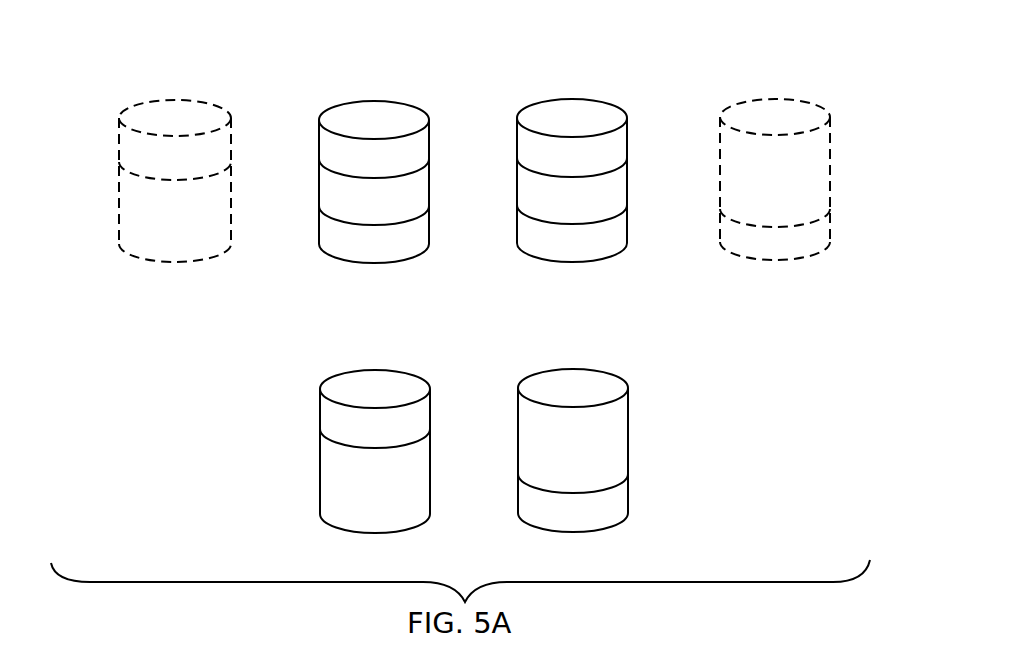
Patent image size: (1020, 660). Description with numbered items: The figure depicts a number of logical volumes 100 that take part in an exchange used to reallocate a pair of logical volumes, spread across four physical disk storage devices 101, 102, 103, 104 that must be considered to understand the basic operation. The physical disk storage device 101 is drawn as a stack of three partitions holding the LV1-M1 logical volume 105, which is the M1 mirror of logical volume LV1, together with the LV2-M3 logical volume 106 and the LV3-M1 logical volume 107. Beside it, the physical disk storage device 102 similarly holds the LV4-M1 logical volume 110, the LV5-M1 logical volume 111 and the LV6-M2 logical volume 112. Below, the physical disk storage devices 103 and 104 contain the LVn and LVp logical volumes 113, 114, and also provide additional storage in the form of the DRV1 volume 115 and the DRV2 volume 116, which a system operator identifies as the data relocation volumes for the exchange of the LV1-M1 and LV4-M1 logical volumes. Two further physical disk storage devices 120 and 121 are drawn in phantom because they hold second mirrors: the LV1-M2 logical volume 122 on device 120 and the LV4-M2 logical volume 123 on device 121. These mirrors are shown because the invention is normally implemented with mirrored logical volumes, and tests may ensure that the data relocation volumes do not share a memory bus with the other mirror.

The logical volumes 100 is at (680, 50).
The physical disk storage device 101 is at (378, 99).
The physical disk storage device 102 is at (576, 97).
The physical disk storage device 103 is at (380, 367).
The physical disk storage device 104 is at (575, 368).
The LV1-M1 logical volume 105 is at (423, 138).
The LV2-M3 logical volume 106 is at (423, 183).
The LV3-M1 logical volume 107 is at (425, 228).
The LV4-M1 logical volume 110 is at (622, 137).
The LV5-M1 logical volume 111 is at (622, 181).
The LV6-M2 logical volume 112 is at (622, 226).
The LVn logical volume 113 is at (423, 474).
The LVp logical volume 114 is at (622, 505).
The DRV1 volume 115 is at (425, 413).
The DRV2 volume 116 is at (620, 447).
The physical disk storage device 120 is at (205, 102).
The physical disk storage device 121 is at (782, 97).
The LV1-M2 logical volume 122 is at (116, 150).
The LV4-M2 logical volume 123 is at (772, 257).